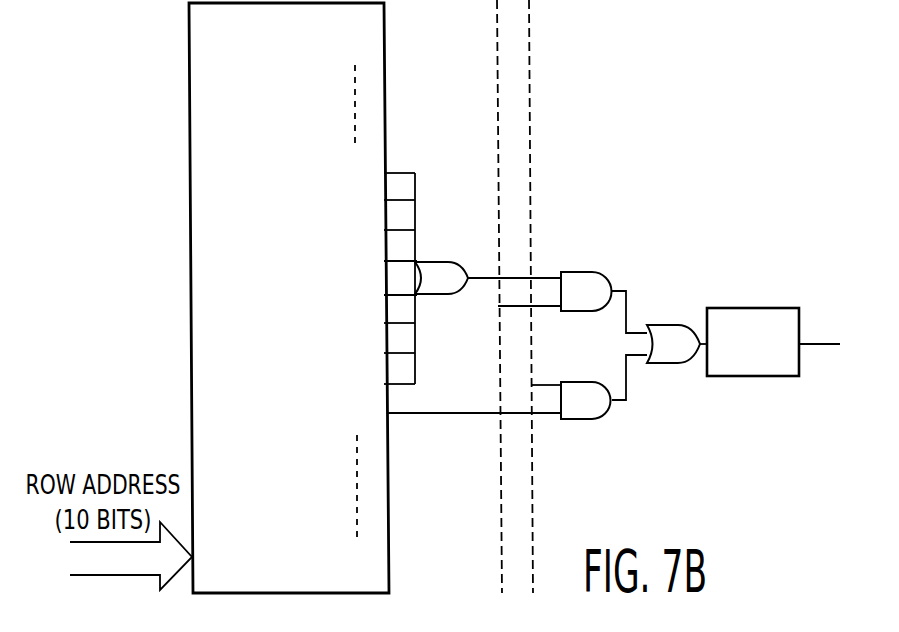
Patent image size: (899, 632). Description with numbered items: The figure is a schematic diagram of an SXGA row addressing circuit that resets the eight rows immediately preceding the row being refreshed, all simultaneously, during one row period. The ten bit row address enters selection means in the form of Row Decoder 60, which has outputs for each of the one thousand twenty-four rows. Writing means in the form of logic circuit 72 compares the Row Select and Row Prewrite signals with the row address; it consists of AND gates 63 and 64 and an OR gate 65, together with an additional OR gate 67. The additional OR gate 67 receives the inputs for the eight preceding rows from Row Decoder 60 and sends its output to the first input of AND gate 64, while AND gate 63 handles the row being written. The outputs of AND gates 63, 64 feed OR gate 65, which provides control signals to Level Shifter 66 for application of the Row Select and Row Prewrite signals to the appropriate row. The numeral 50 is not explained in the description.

The row decoder 60 is at (190, 290).
The OR gate 67 is at (446, 261).
The AND gate 64 is at (597, 272).
The AND gate 63 is at (614, 404).
The OR gate 65 is at (665, 325).
The level shifter 66 is at (775, 376).
The logic circuit 72 is at (415, 437).
The row decoder circuit 50 is at (728, 493).